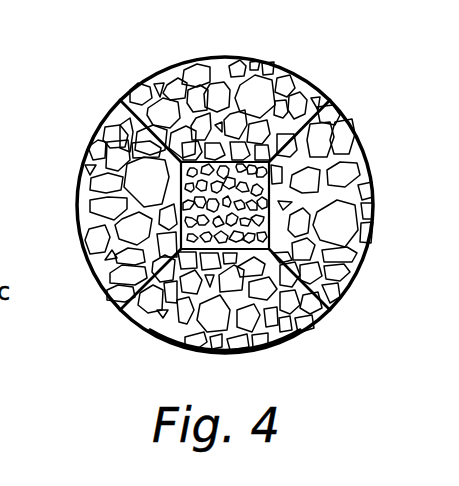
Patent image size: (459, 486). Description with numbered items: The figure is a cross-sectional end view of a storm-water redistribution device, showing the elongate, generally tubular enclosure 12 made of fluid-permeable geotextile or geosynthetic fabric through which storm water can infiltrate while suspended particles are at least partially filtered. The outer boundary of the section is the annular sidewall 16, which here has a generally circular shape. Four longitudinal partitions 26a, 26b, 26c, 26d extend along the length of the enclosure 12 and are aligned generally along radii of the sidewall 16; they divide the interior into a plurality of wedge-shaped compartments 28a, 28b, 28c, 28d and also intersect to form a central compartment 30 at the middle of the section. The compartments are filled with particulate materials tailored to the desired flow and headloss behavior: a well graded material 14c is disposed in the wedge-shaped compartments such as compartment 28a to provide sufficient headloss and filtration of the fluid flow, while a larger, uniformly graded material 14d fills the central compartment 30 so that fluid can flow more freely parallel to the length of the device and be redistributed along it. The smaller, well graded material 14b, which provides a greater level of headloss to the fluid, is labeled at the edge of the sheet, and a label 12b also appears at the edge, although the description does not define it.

The enclosure 12 is at (298, 72).
The annular sidewall 16 is at (207, 353).
The central compartment 30 is at (246, 211).
The well graded material 14c is at (223, 85).
The uniformly graded material 14d is at (246, 226).
The longitudinal partition 26a is at (311, 118).
The longitudinal partition 26b is at (307, 328).
The longitudinal partition 26c is at (110, 307).
The longitudinal partition 26d is at (137, 100).
The wedge-shaped compartment 28a is at (269, 80).
The wedge-shaped compartment 28b is at (332, 256).
The wedge-shaped compartment 28c is at (262, 337).
The wedge-shaped compartment 28d is at (88, 195).
The well graded material 14b is at (10, 122).
The body 12b is at (9, 170).